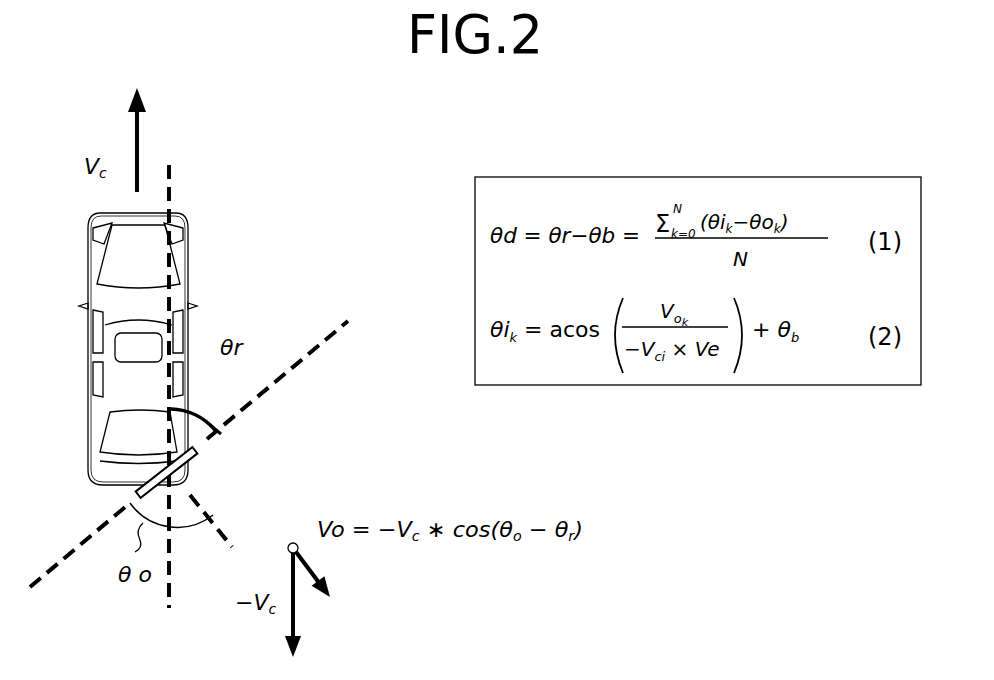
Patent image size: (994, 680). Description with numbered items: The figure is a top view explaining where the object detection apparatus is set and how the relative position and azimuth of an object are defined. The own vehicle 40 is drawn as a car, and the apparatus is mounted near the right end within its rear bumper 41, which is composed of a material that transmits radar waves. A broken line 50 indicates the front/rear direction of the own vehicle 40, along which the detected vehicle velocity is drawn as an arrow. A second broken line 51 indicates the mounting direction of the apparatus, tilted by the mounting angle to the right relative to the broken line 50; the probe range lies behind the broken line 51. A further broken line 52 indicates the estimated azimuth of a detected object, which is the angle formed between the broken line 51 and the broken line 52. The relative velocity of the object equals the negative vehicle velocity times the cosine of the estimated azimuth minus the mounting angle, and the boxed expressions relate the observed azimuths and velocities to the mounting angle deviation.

The own vehicle 40 is at (92, 252).
The rear bumper 41 is at (197, 456).
The broken line 50 is at (172, 176).
The broken line 51 is at (337, 318).
The broken line 52 is at (220, 546).